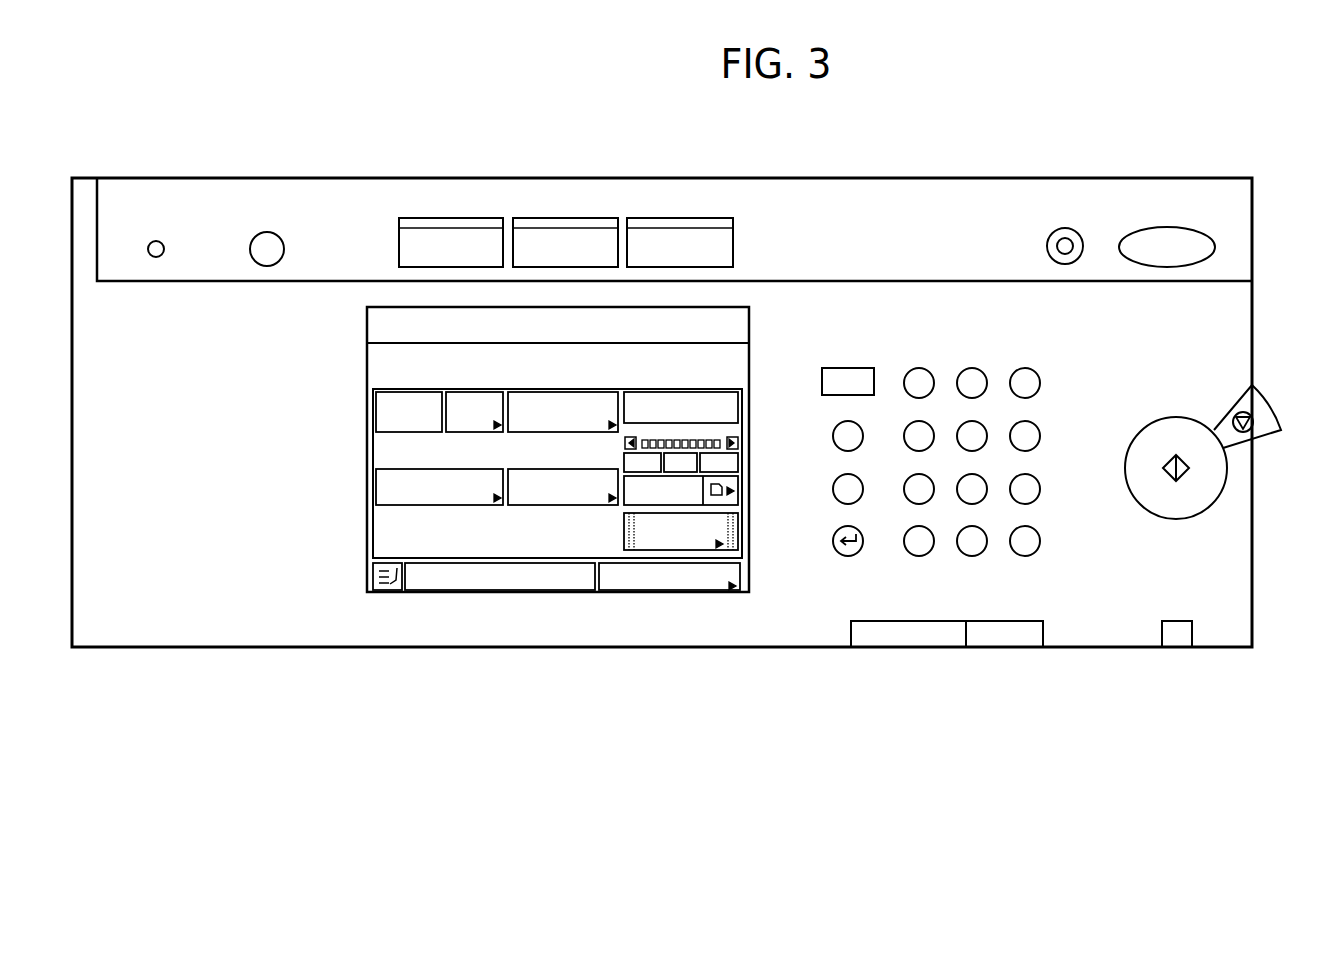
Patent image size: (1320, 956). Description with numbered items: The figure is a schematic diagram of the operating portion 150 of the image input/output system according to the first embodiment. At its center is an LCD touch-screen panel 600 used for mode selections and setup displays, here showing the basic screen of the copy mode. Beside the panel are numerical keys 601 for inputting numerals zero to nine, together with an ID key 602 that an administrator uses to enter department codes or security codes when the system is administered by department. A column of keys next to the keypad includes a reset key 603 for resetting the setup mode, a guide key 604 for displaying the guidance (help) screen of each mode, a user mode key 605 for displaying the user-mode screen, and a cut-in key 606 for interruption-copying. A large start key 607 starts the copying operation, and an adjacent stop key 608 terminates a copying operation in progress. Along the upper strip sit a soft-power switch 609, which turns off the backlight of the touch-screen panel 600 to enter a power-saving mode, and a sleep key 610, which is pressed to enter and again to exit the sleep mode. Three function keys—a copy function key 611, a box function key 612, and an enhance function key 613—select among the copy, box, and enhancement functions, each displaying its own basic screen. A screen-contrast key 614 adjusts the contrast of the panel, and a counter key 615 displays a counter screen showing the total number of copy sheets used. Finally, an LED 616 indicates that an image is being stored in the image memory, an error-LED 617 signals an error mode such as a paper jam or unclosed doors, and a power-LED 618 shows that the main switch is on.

The operating portion 150 is at (302, 648).
The LCD touch-screen panel 600 is at (560, 583).
The numerical keys 601 is at (970, 368).
The ID key 602 is at (905, 544).
The reset key 603 is at (822, 382).
The guide key 604 is at (833, 436).
The user mode key 605 is at (833, 489).
The cut-in key 606 is at (833, 541).
The start key 607 is at (1164, 512).
The stop key 608 is at (1270, 428).
The soft-power switch 609 is at (1170, 227).
The sleep key 610 is at (1047, 246).
The copy function key 611 is at (457, 218).
The box function key 612 is at (568, 218).
The enhance function key 613 is at (683, 218).
The screen-contrast key 614 is at (267, 267).
The counter key 615 is at (156, 258).
The LED 616 is at (928, 648).
The error-LED 617 is at (1014, 648).
The power-LED 618 is at (1176, 648).